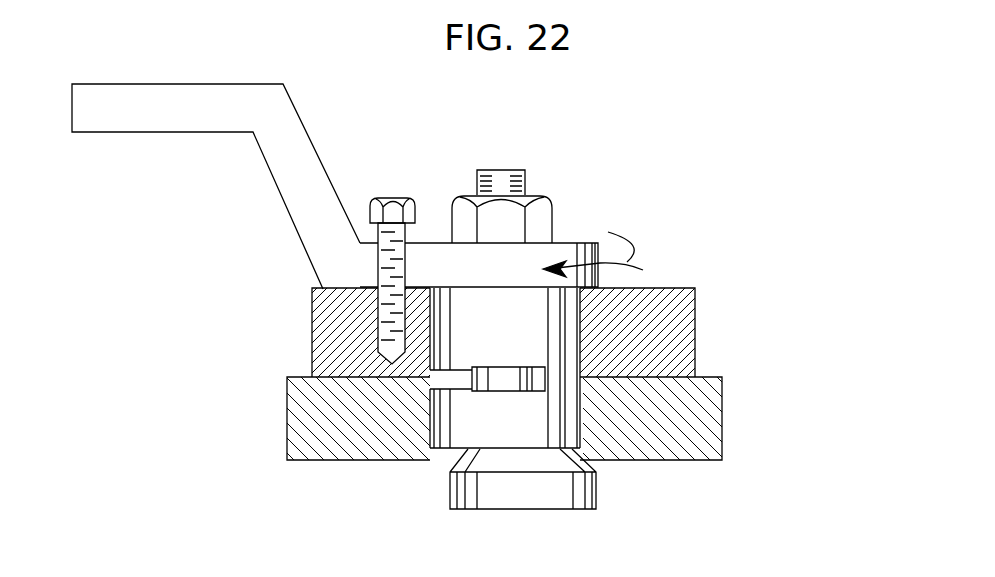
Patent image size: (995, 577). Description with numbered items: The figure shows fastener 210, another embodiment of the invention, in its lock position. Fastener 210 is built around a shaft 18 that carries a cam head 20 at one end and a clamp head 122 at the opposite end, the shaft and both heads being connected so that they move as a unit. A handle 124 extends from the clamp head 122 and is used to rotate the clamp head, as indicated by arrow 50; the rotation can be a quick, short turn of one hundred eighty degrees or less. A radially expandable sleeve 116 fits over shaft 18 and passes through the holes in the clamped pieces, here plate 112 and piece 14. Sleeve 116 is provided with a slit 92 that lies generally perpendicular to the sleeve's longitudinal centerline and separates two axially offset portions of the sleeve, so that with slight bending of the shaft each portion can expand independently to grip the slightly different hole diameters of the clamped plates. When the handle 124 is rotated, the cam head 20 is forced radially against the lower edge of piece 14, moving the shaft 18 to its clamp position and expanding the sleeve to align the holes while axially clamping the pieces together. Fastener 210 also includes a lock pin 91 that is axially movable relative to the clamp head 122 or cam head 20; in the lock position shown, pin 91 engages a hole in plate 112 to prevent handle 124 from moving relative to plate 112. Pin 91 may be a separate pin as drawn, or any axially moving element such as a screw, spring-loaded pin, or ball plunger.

The fastener 210 is at (770, 158).
The piece 14 is at (430, 385).
The shaft 18 is at (507, 168).
The cam head 20 is at (598, 492).
The arrow 50 is at (643, 270).
The lock pin 91 is at (391, 197).
The slit 92 is at (462, 392).
The plate 112 is at (312, 313).
The sleeve 116 is at (428, 417).
The clamp head 122 is at (568, 243).
The handle 124 is at (178, 133).